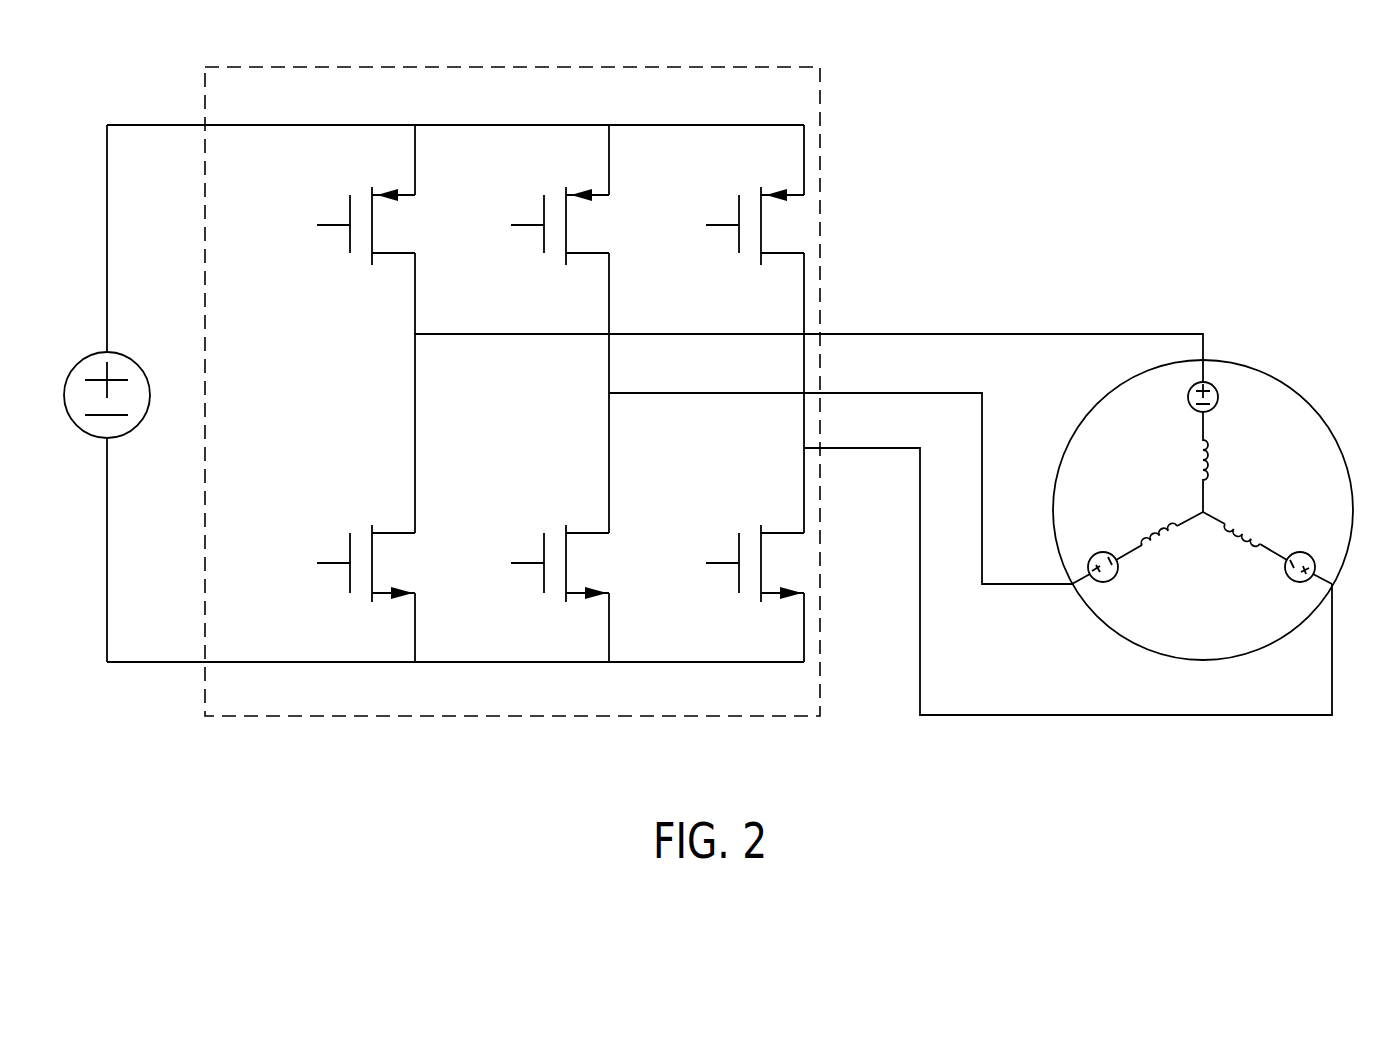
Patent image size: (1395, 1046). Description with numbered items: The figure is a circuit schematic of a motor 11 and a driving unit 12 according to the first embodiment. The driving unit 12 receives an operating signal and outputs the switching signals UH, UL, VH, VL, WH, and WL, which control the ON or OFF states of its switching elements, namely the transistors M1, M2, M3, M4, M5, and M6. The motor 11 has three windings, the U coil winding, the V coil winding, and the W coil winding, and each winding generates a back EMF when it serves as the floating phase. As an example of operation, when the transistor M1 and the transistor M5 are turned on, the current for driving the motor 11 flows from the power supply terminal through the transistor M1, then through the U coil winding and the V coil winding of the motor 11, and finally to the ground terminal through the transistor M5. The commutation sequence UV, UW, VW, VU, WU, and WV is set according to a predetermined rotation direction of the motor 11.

The motor 11 is at (1277, 376).
The driving unit 12 is at (503, 391).
The transistor M1 is at (366, 248).
The transistor M2 is at (560, 248).
The transistor M3 is at (755, 248).
The transistor M4 is at (366, 587).
The transistor M5 is at (560, 587).
The transistor M6 is at (755, 587).